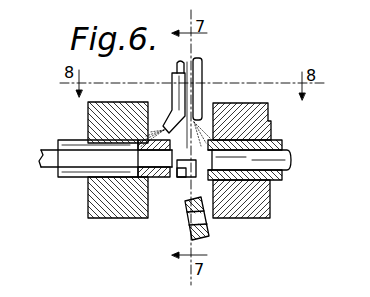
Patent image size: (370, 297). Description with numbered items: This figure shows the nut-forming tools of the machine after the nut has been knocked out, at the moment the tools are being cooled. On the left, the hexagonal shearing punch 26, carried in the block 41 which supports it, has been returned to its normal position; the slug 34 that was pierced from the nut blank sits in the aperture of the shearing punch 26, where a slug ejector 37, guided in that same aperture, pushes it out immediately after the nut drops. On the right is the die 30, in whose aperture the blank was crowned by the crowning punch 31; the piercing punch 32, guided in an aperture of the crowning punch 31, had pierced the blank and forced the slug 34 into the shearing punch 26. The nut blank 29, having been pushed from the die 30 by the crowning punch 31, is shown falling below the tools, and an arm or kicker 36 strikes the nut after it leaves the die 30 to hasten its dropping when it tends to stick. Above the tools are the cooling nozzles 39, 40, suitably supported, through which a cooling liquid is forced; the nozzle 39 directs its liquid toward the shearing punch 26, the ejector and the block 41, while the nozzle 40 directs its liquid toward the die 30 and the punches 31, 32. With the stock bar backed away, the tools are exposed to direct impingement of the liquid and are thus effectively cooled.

The shearing punch 26 is at (117, 172).
The nut blank 29 is at (207, 233).
The die 30 is at (222, 210).
The crowning punch 31 is at (248, 180).
The piercing punch 32 is at (283, 156).
The slug 34 is at (180, 178).
The kicker 36 is at (198, 78).
The slug ejector 37 is at (152, 178).
The nozzle 39 is at (173, 105).
The nozzle 40 is at (186, 106).
The block 41 is at (125, 207).